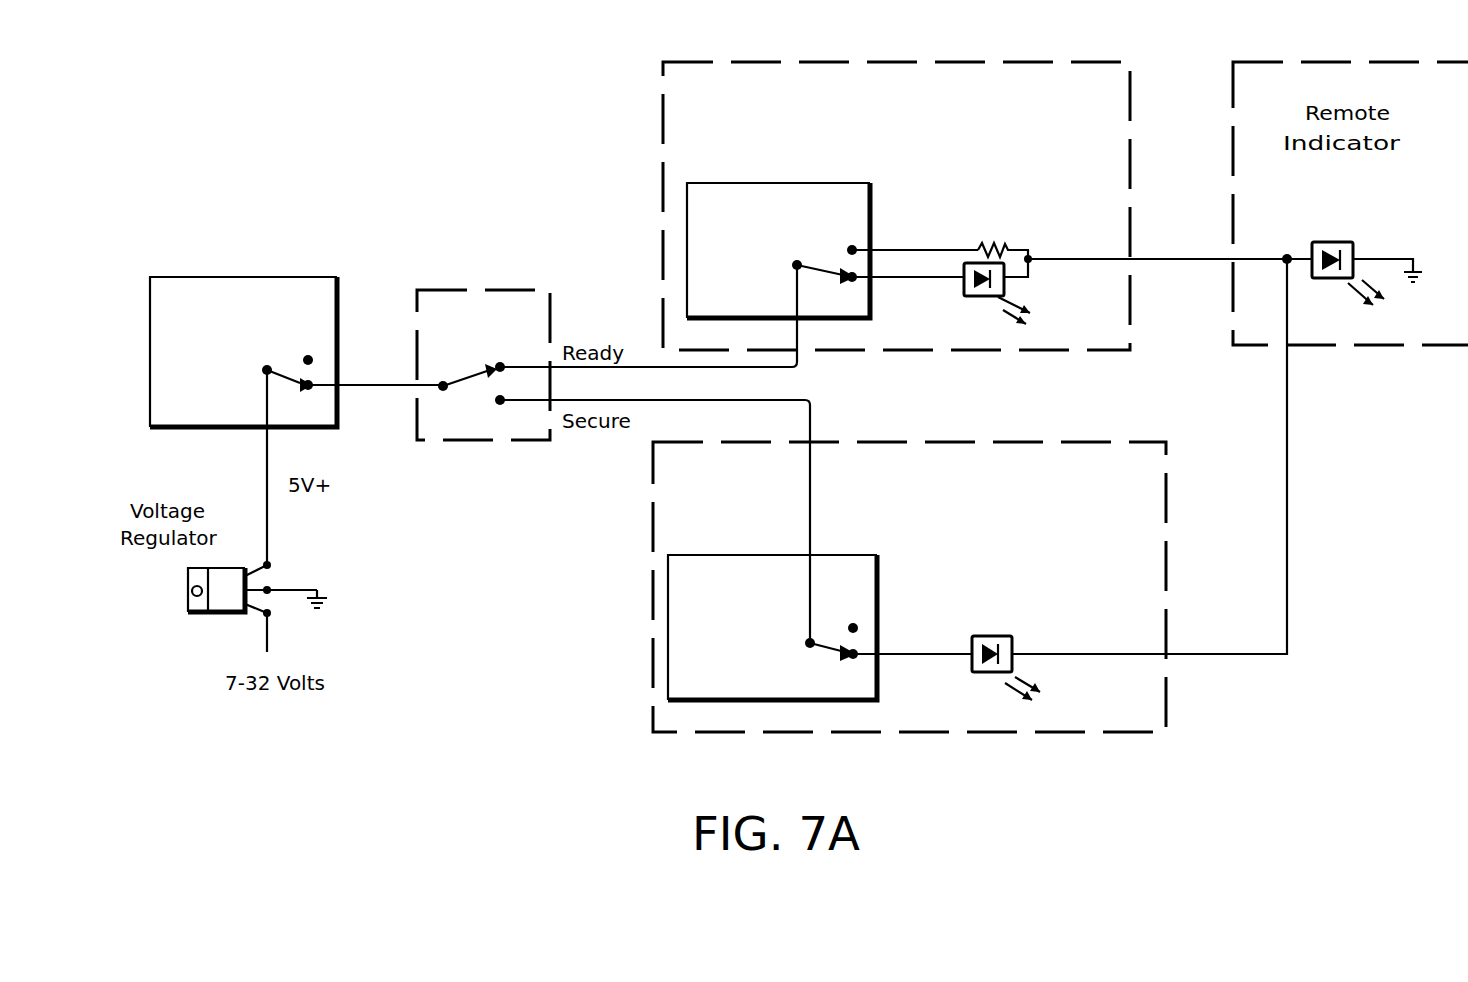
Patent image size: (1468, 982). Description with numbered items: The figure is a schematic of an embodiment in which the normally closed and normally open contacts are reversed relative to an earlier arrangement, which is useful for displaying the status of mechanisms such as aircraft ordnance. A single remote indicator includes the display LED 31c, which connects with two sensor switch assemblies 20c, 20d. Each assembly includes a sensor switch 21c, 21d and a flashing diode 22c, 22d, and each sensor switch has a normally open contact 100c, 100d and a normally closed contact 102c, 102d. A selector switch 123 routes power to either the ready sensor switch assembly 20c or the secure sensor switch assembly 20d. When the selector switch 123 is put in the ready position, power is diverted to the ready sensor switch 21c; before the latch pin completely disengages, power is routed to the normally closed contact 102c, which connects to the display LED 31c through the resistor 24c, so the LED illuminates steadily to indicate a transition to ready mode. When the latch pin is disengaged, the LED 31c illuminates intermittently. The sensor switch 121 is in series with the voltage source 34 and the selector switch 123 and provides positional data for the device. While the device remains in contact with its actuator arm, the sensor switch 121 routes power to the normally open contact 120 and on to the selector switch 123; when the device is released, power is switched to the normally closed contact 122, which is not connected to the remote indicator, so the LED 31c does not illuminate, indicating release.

The sensor switch 121 is at (262, 277).
The normally closed contact 122 is at (314, 357).
The normally open contact 120 is at (315, 381).
The selector switch 123 is at (487, 290).
The voltage source 34 is at (267, 457).
The ready sensor switch assembly 20c is at (663, 105).
The ready sensor switch 21c is at (742, 296).
The normally closed contact 102c is at (858, 246).
The normally open contact 100c is at (858, 279).
The resistor 24c is at (1012, 238).
The flashing diode 22c is at (1010, 285).
The display LED 31c is at (1325, 242).
The secure sensor switch assembly 20d is at (653, 527).
The secure sensor switch 21d is at (742, 668).
The normally open contact 100d is at (858, 625).
The normally closed contact 102d is at (858, 651).
The flashing diode 22d is at (1005, 636).